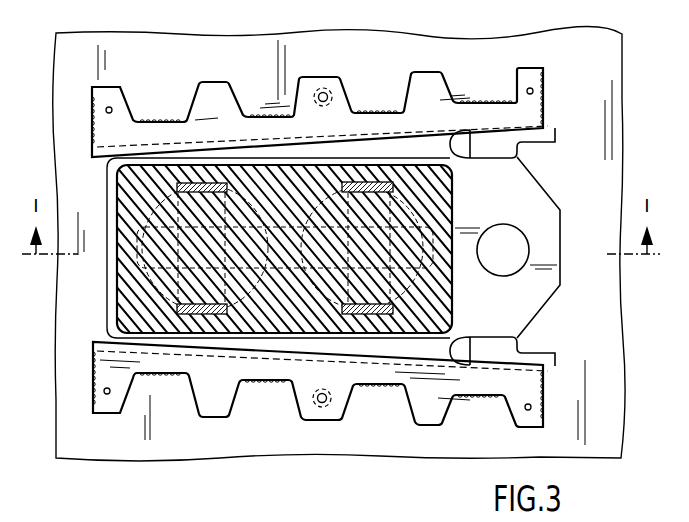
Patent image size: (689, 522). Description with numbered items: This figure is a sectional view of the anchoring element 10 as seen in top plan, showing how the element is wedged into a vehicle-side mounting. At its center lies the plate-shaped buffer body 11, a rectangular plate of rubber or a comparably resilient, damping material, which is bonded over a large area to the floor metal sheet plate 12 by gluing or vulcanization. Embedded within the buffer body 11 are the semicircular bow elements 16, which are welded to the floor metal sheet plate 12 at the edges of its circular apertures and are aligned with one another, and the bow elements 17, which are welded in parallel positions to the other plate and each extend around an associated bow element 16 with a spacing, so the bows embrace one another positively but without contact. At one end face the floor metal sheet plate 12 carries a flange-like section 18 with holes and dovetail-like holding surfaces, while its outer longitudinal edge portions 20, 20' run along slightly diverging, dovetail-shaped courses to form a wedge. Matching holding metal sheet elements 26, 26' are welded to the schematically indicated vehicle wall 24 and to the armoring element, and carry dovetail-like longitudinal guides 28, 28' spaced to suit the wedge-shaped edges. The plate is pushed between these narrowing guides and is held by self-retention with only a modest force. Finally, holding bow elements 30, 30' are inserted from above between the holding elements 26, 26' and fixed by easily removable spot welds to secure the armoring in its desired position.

The anchoring element 10 is at (562, 102).
The buffer body 11 is at (457, 204).
The floor metal sheet plate 12 is at (563, 253).
The bow elements 16 is at (160, 283).
The bow elements 17 is at (178, 309).
The flange-like section 18 is at (537, 292).
The outer longitudinal edge portion 20 is at (344, 103).
The outer longitudinal edge portion 20' is at (304, 404).
The vehicle wall 24 is at (103, 433).
The holding metal sheet element 26 is at (317, 101).
The holding metal sheet element 26' is at (318, 422).
The dovetail-like longitudinal guide 28 is at (322, 110).
The dovetail-like longitudinal guide 28' is at (322, 386).
The holding bow element 30 is at (517, 156).
The holding bow element 30' is at (524, 339).